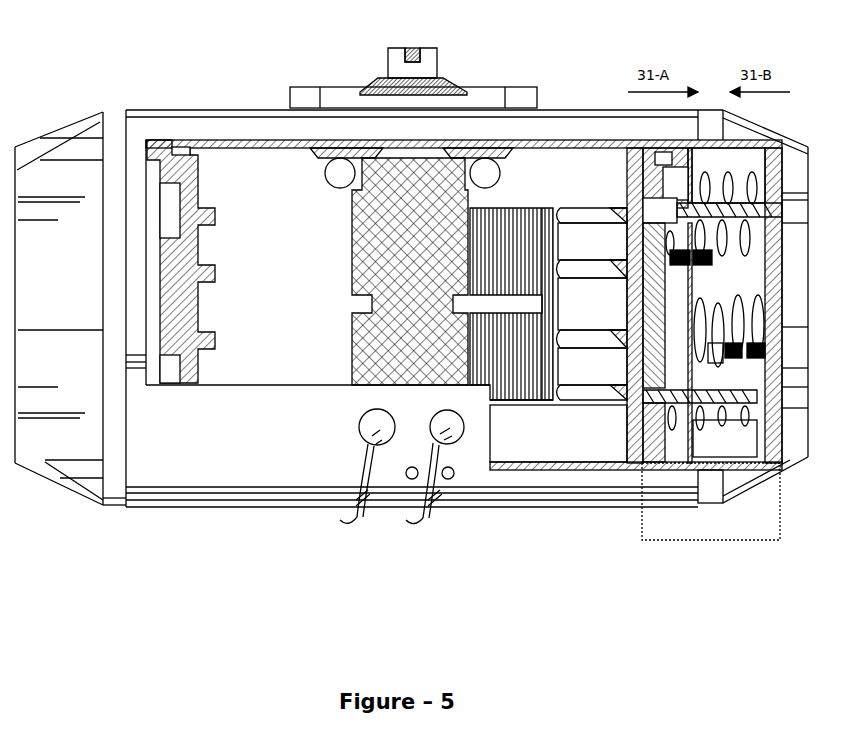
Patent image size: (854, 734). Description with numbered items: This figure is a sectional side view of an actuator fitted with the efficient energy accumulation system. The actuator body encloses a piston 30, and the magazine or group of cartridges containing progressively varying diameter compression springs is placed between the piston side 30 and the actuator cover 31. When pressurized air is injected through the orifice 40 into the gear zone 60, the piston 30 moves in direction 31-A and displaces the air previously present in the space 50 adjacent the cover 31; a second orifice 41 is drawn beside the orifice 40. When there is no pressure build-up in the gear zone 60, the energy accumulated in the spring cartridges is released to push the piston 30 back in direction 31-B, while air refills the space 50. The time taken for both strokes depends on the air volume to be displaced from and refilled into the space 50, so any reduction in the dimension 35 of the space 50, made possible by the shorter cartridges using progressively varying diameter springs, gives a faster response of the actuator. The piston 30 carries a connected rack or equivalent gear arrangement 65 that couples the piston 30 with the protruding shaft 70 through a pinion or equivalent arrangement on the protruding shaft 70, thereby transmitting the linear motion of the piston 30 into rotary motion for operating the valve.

The piston 30 is at (200, 385).
The actuator cover 31 is at (770, 460).
The dimension of the space 35 is at (708, 548).
The orifice 40 is at (367, 456).
The second wire terminal 41 is at (435, 456).
The space 50 is at (712, 305).
The gear zone 60 is at (409, 271).
The rack or equivalent gear arrangement 65 is at (522, 372).
The protruding shaft 70 is at (417, 65).